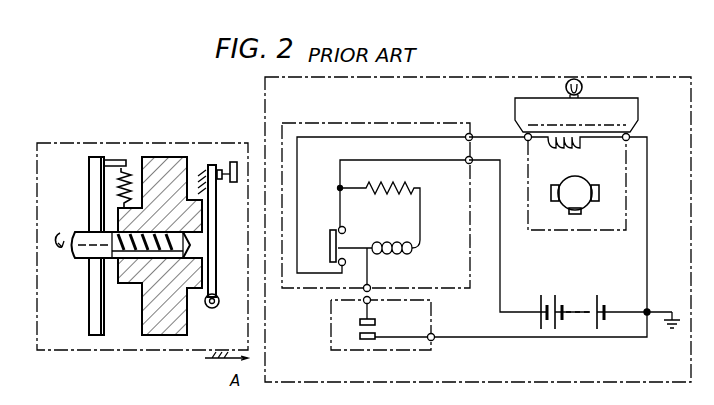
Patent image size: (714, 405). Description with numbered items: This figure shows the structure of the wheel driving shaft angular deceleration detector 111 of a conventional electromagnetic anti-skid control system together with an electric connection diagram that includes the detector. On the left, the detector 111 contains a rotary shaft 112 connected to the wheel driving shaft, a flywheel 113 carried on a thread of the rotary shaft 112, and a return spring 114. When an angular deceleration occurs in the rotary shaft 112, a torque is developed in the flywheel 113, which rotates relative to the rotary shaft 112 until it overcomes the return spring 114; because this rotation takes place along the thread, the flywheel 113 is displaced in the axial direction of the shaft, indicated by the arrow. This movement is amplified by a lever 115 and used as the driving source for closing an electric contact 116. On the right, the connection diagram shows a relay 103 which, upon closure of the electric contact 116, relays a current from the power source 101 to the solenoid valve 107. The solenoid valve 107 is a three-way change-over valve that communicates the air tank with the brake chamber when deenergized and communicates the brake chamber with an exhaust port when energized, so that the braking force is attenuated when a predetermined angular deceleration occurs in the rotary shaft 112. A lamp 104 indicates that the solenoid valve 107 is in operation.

The power source 101 is at (577, 324).
The relay 103 is at (450, 124).
The lamp 104 is at (579, 80).
The solenoid valve 107 is at (560, 231).
The angular deceleration detector 111 is at (103, 349).
The rotary shaft 112 is at (80, 257).
The flywheel 113 is at (170, 336).
The return spring 114 is at (130, 165).
The lever 115 is at (204, 252).
The electric contact 116 is at (222, 162).